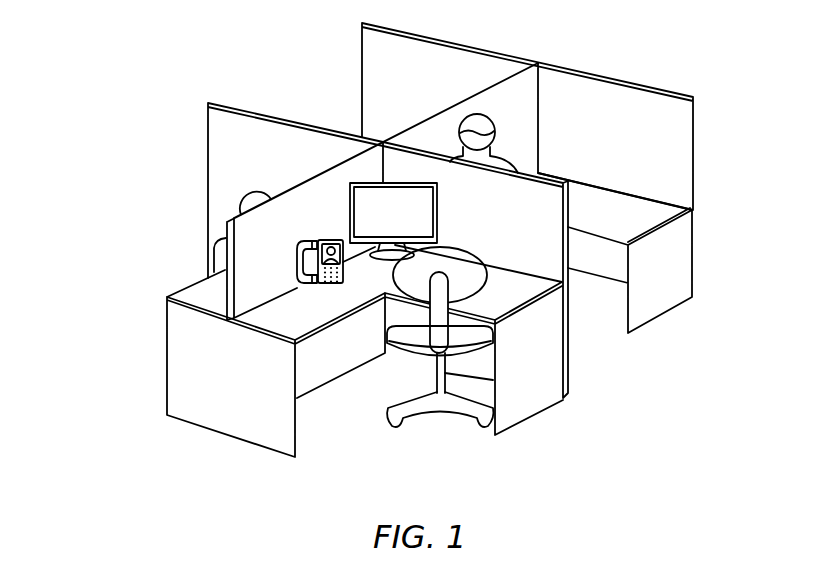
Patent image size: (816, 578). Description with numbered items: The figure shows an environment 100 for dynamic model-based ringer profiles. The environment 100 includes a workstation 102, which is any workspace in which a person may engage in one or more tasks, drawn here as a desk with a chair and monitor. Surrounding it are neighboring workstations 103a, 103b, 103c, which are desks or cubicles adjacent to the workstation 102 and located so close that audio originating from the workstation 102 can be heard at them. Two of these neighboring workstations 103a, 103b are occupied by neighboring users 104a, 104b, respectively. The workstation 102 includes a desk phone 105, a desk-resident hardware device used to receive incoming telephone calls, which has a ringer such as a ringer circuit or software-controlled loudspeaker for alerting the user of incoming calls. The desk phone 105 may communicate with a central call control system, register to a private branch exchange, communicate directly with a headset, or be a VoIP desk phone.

The environment 100 is at (381, 272).
The workstation 102 is at (355, 430).
The neighboring workstation 103a is at (147, 239).
The neighboring workstation 103b is at (603, 347).
The neighboring workstation 103c is at (307, 81).
The neighboring user 104a is at (270, 190).
The neighboring user 104b is at (500, 113).
The desk phone 105 is at (328, 242).